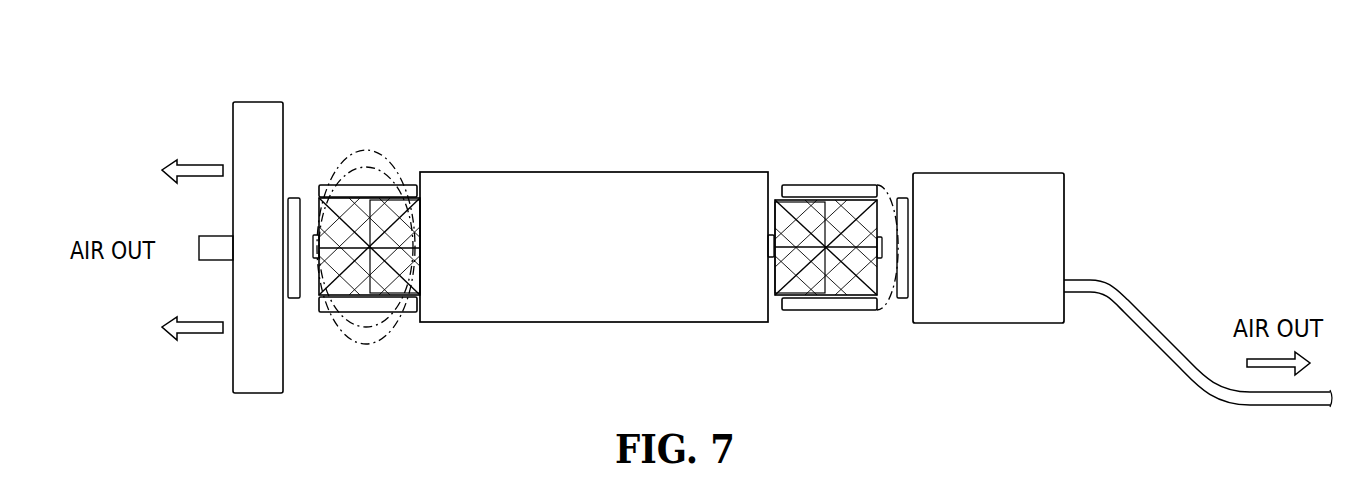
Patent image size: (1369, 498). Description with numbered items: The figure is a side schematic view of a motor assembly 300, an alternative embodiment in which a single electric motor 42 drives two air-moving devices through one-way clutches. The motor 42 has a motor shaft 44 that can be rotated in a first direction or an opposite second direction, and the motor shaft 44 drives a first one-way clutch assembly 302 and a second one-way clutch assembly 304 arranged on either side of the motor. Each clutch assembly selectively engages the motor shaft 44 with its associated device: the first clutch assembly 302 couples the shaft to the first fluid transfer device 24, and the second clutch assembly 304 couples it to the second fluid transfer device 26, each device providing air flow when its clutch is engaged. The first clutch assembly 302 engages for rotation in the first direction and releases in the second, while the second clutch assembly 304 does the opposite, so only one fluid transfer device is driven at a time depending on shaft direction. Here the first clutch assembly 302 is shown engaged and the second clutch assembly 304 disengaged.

The first fluid transfer device 24 is at (990, 173).
The second fluid transfer device 26 is at (233, 133).
The electric motor 42 is at (595, 172).
The motor shaft 44 is at (770, 243).
The motor assembly 300 is at (597, 253).
The first one-way clutch assembly 302 is at (848, 338).
The second one-way clutch assembly 304 is at (381, 350).